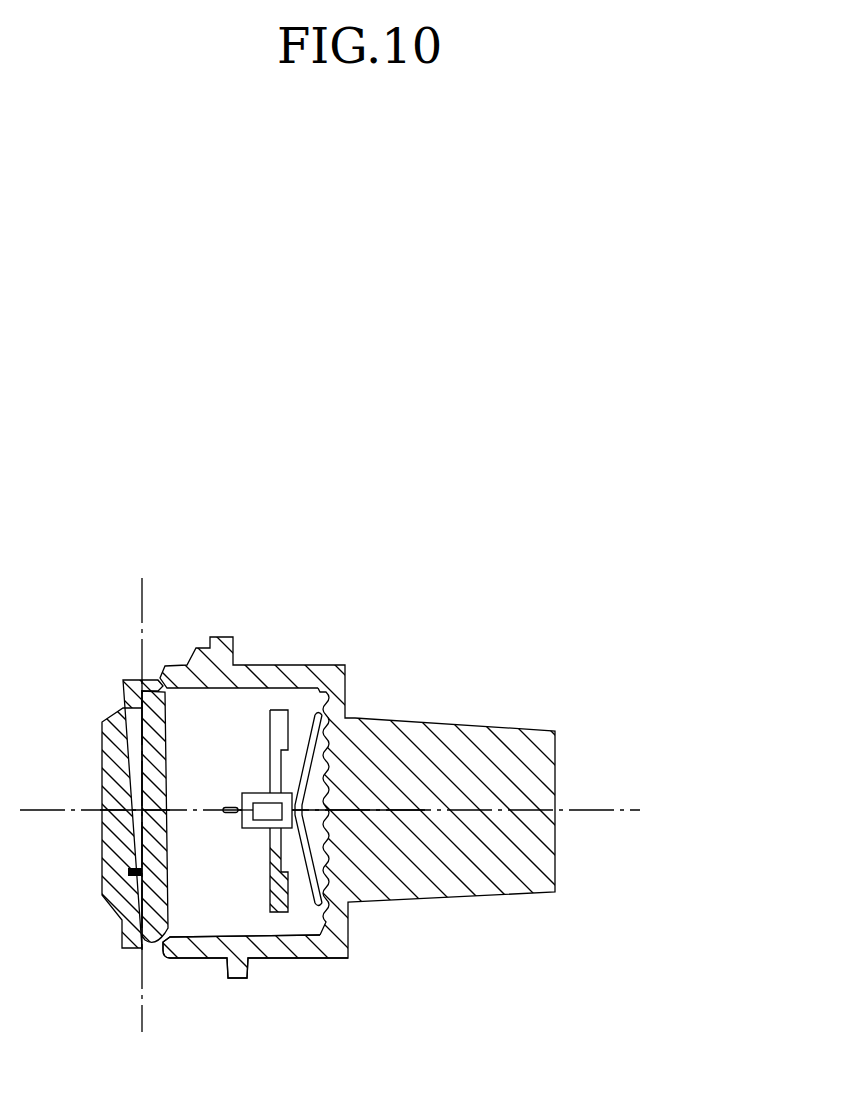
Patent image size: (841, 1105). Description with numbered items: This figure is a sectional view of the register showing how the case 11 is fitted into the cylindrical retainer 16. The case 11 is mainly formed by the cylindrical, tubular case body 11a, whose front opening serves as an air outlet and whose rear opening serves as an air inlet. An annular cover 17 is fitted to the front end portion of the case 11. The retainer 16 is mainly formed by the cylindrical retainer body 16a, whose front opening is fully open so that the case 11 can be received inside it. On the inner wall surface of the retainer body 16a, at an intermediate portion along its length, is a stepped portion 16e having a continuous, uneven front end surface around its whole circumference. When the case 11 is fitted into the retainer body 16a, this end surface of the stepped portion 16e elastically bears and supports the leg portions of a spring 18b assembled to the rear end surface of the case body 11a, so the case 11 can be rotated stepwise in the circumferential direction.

The retainer 16 is at (424, 722).
The retainer body 16a is at (196, 958).
The stepped portion 16e is at (327, 708).
The annular cover 17 is at (96, 712).
The case 11 is at (136, 872).
The case body 11a is at (271, 768).
The spring 18b is at (319, 888).